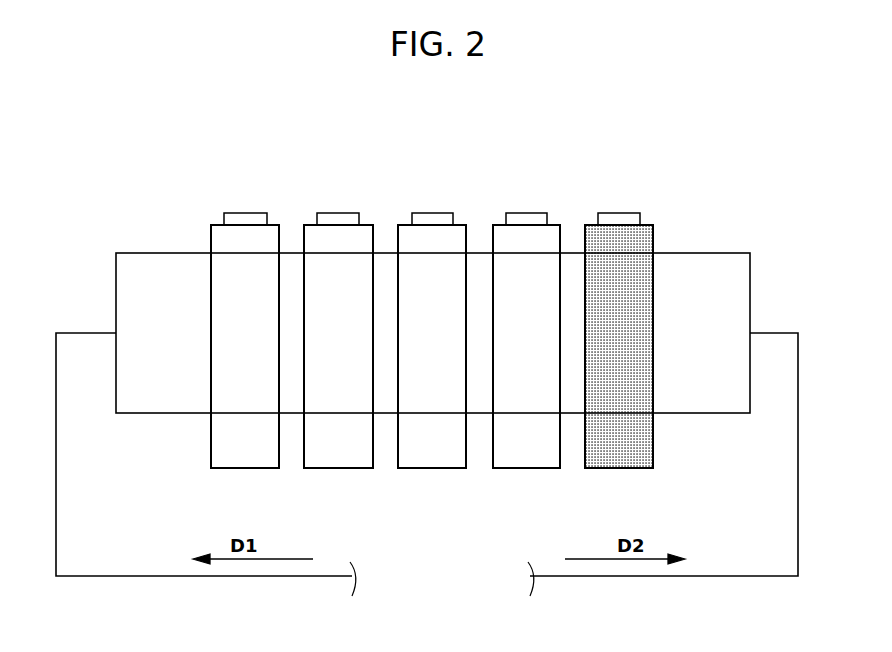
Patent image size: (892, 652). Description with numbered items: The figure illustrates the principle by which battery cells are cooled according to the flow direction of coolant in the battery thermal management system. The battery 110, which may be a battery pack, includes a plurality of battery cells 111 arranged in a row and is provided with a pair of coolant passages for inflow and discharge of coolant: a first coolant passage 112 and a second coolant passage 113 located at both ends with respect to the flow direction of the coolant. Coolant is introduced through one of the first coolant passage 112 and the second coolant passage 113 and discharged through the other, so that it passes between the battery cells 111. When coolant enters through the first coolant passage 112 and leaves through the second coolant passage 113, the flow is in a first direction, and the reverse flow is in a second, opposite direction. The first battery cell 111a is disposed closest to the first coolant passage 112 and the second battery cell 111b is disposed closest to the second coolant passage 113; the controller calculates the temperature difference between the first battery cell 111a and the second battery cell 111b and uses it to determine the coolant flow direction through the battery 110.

The battery 110 is at (185, 218).
The battery cells 111 is at (560, 200).
The first battery cell 111a is at (245, 212).
The second battery cell 111b is at (618, 212).
The first coolant passage 112 is at (116, 332).
The second coolant passage 113 is at (750, 332).